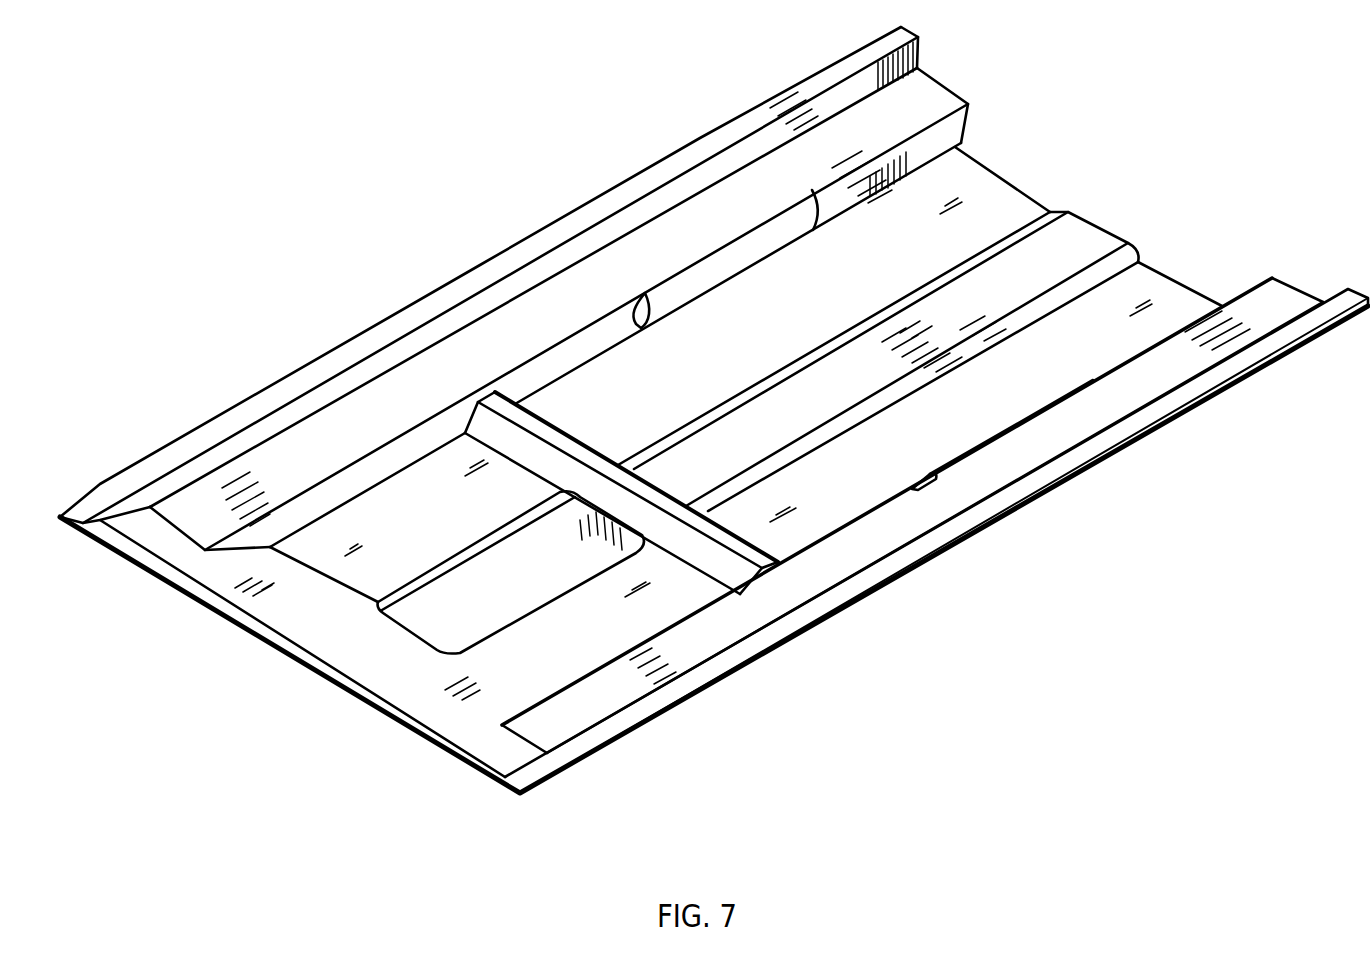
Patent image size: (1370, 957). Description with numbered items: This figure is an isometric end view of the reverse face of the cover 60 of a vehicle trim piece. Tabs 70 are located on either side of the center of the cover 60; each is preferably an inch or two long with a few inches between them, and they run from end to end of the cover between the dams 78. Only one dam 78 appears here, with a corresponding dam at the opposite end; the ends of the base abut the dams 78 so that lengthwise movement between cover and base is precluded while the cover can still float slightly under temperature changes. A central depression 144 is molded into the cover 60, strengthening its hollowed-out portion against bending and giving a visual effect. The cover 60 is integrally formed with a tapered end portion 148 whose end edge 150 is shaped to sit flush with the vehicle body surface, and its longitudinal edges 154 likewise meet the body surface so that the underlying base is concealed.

The cover 60 is at (399, 211).
The tabs 70 is at (727, 268).
The dam 78 is at (553, 437).
The central depression 144 is at (1088, 235).
The tapered end portion 148 is at (297, 605).
The end edge 150 is at (333, 665).
The longitudinal edges 154 is at (750, 650).